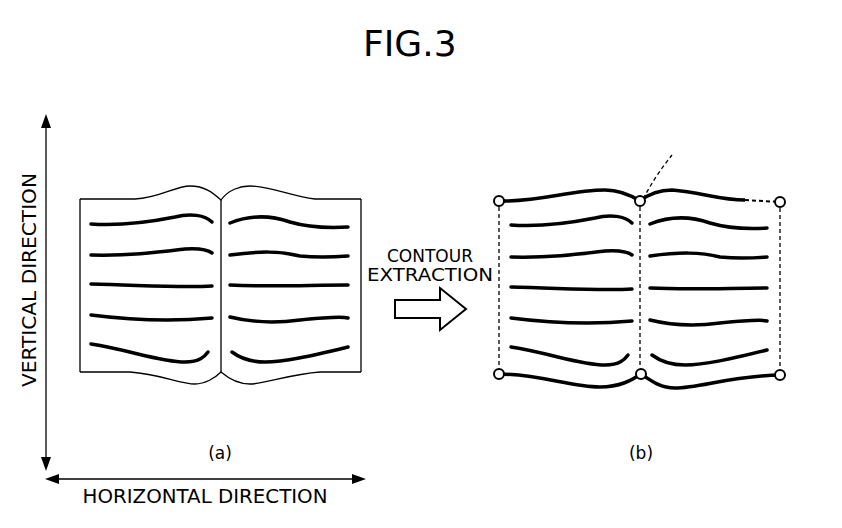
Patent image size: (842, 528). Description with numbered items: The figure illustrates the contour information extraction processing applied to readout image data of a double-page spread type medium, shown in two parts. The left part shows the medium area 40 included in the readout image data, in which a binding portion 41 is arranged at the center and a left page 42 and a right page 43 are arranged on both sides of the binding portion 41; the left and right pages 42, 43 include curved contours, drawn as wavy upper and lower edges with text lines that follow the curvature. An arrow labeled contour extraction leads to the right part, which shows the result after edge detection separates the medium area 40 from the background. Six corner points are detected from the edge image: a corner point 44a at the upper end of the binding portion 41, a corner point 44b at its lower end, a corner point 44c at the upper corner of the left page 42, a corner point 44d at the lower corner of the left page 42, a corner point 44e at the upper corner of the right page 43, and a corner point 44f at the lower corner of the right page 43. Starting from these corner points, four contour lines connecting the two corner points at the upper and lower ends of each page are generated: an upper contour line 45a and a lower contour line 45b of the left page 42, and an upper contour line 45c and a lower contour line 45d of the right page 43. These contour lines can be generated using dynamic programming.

The medium area 40 is at (92, 176).
The binding portion 41 is at (221, 212).
The left page 42 is at (142, 200).
The right page 43 is at (295, 203).
The corner point 44a is at (642, 196).
The corner point 44b is at (643, 380).
The corner point 44c is at (504, 199).
The corner point 44d is at (505, 379).
The corner point 44e is at (781, 197).
The corner point 44f is at (781, 381).
The upper contour line 45a is at (605, 189).
The lower contour line 45b is at (577, 385).
The upper contour line 45c is at (734, 198).
The lower contour line 45d is at (732, 384).